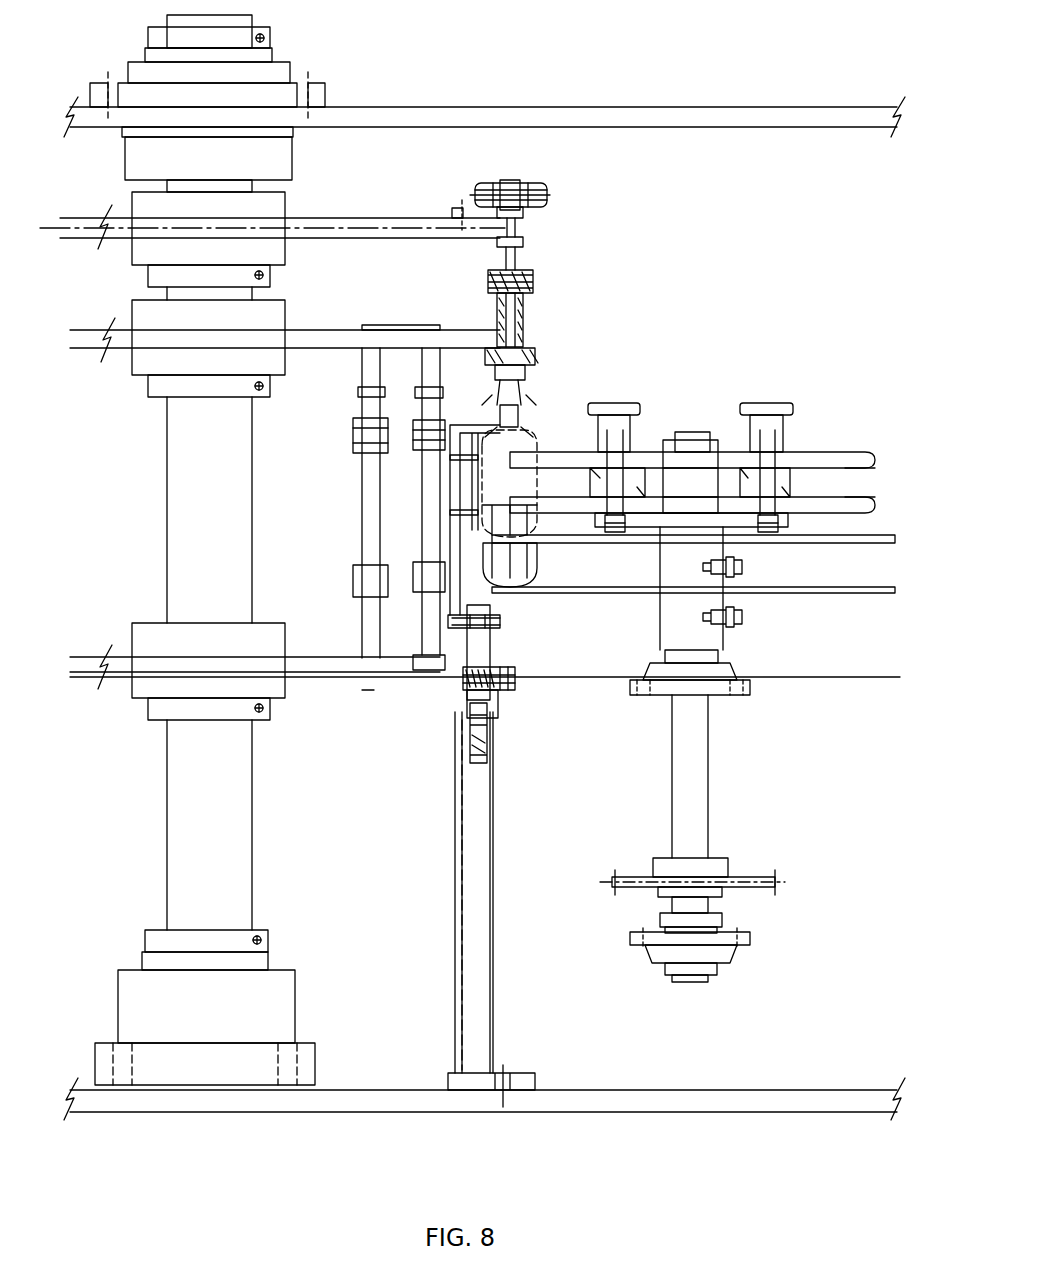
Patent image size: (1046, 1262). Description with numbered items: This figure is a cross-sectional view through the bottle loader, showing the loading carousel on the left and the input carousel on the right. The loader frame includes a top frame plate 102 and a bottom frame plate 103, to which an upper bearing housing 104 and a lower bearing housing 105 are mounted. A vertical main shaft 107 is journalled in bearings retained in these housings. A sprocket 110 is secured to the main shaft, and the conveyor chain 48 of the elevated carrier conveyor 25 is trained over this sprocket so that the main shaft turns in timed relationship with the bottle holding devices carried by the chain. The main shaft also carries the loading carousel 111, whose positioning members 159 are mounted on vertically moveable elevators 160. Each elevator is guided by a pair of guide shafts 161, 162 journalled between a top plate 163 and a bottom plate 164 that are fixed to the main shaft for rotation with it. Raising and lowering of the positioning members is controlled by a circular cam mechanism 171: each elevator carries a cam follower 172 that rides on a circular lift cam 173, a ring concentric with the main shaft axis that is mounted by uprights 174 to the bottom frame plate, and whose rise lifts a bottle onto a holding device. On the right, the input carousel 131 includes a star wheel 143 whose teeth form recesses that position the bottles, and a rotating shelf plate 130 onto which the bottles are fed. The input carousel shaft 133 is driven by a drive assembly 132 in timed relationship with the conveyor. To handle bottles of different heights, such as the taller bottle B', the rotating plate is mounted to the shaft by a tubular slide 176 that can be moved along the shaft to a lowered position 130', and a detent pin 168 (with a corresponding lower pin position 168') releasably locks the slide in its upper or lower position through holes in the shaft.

The upper bearing housing 104 is at (290, 70).
The top frame plate 102 is at (590, 105).
The sprocket 110 is at (330, 218).
The carrier conveyor 25 is at (552, 185).
The conveyor chain 48 is at (523, 237).
The top plate 163 is at (316, 330).
The positioning member 159 is at (515, 430).
The bottle B' is at (534, 525).
The guide shaft 161 is at (361, 488).
The elevator 160 is at (353, 434).
The guide shaft 162 is at (420, 528).
The bottom plate 164 is at (108, 655).
The main shaft 107 is at (253, 855).
The lower bearing housing 105 is at (118, 1015).
The bottom frame plate 103 is at (615, 1090).
The cam follower 172 is at (500, 612).
The circular lift cam 173 is at (460, 690).
The circular cam mechanism 171 is at (505, 710).
The loading carousel 111 is at (368, 685).
The upright 174 is at (495, 945).
The input carousel 131 is at (823, 402).
The star wheel 143 is at (878, 500).
The tubular member or slide 176 is at (690, 570).
The detent pin 168 is at (758, 565).
The set screw 168' is at (759, 630).
The rotating shelf plate 130 is at (699, 557).
The lowered position of rotating plate 130' is at (699, 615).
The input carousel shaft 133 is at (710, 772).
The drive assembly 132 is at (765, 918).